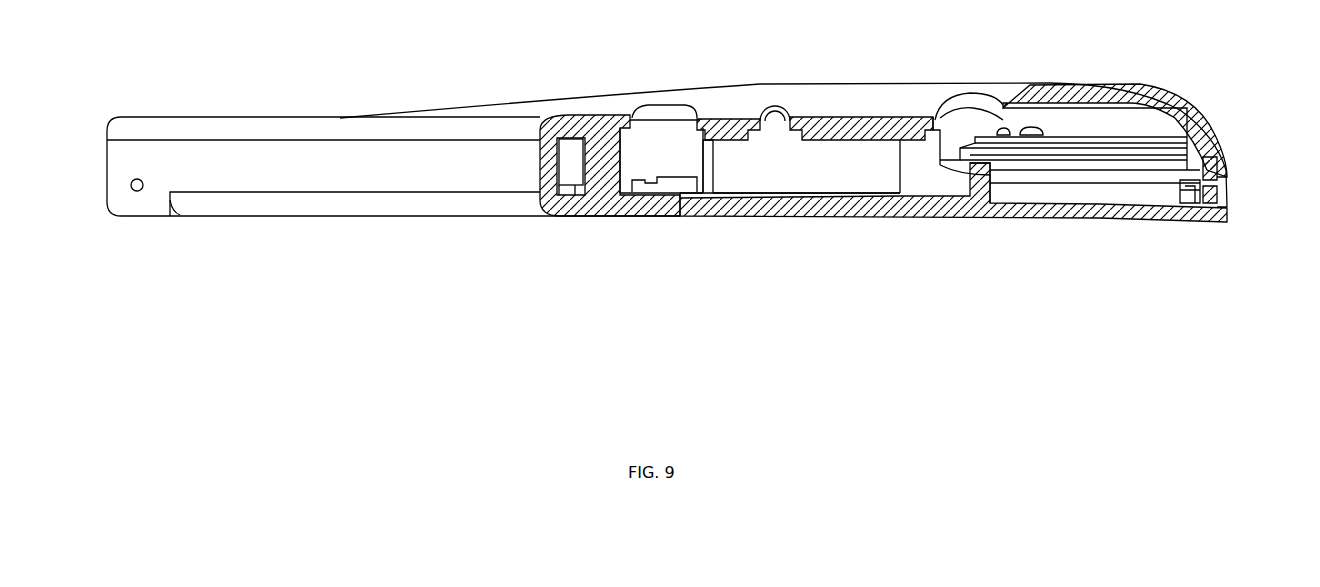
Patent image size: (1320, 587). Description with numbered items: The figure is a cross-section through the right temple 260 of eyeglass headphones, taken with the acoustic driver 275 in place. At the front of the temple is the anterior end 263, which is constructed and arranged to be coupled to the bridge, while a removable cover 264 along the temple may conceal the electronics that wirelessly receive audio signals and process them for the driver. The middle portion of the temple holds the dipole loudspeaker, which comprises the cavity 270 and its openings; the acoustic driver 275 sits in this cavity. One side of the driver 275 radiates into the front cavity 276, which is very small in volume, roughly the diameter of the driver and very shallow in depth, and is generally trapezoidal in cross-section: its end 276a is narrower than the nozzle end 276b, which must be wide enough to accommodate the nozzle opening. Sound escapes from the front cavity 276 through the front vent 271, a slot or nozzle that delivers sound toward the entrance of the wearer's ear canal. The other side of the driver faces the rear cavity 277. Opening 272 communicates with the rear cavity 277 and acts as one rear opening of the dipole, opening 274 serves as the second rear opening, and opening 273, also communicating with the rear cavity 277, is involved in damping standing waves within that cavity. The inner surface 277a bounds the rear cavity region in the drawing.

The right temple 260 is at (644, 60).
The anterior end 263 is at (143, 121).
The removable cover 264 is at (282, 202).
The cavity 270 is at (750, 183).
The front vent 271 is at (1198, 192).
The opening 272 is at (960, 98).
The opening 273 is at (777, 108).
The opening 274 is at (670, 110).
The acoustic driver 275 is at (1170, 167).
The front cavity 276 is at (630, 213).
The end 276a is at (985, 210).
The nozzle end 276b is at (1187, 200).
The rear cavity 277 is at (970, 128).
The inner surface 277a is at (940, 125).